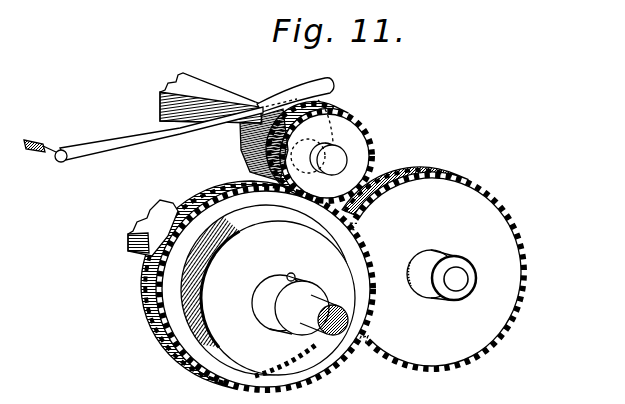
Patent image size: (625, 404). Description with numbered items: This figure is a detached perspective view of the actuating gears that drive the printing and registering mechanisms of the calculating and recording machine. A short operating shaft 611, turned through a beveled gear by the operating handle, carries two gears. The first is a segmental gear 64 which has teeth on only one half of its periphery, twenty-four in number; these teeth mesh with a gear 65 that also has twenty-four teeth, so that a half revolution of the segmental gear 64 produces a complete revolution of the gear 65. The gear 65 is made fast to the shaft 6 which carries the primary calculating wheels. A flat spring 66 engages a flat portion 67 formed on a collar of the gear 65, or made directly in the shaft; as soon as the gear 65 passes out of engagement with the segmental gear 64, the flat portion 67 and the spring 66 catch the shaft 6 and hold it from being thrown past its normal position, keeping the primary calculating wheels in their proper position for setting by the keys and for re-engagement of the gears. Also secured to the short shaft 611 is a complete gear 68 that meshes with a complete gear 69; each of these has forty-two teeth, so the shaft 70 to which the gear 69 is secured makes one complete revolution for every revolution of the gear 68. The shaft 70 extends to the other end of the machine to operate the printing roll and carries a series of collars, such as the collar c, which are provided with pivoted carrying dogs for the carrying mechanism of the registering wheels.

The shaft 6 is at (213, 96).
The flat spring 66 is at (112, 139).
The flat portion 67 is at (275, 118).
The gear 65 is at (371, 136).
The complete gear 69 is at (503, 303).
The shaft 70 is at (457, 278).
The segmental gear 64 is at (320, 376).
The complete gear 68 is at (151, 318).
The shaft 611 is at (312, 322).
The collar c is at (541, 238).